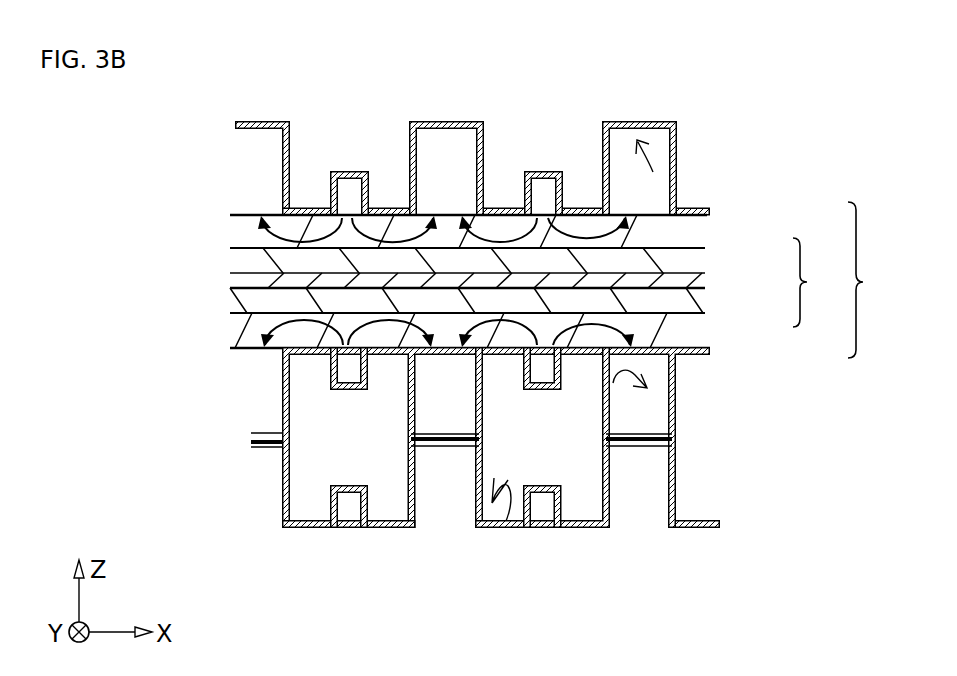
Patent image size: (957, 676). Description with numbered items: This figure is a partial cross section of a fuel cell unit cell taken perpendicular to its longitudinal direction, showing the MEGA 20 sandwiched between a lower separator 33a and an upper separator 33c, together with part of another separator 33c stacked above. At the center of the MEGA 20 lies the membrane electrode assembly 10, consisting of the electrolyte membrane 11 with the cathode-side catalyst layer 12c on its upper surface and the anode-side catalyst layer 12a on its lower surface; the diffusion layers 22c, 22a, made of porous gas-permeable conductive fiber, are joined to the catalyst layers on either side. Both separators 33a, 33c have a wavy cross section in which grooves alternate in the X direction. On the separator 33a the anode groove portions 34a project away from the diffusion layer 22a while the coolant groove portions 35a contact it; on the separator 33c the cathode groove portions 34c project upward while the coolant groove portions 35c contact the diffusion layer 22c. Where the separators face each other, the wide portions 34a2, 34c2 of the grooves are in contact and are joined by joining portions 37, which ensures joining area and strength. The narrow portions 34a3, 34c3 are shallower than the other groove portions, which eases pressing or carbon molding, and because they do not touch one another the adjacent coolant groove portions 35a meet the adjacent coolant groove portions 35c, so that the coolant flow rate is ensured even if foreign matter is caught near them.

The membrane electrode assembly 10 is at (813, 282).
The electrolyte membrane 11 is at (700, 278).
The anode-side catalyst layer 12a is at (700, 302).
The cathode-side catalyst layer 12c is at (700, 260).
The MEGA 20 is at (870, 280).
The anode-side diffusion layer 22a is at (683, 330).
The cathode-side diffusion layer 22c is at (683, 228).
The separator 33a is at (681, 424).
The separator 33c is at (632, 106).
The anode groove portion 34a is at (612, 480).
The wide portion 34a2 is at (478, 425).
The narrow portion 34a3 is at (550, 358).
The cathode groove portion 34c is at (669, 166).
The wide portion 34c2 is at (417, 165).
The narrow portion 34c3 is at (538, 170).
The coolant groove portion 35a is at (394, 375).
The coolant groove portion 35c is at (391, 172).
The joining portion 37 is at (442, 446).